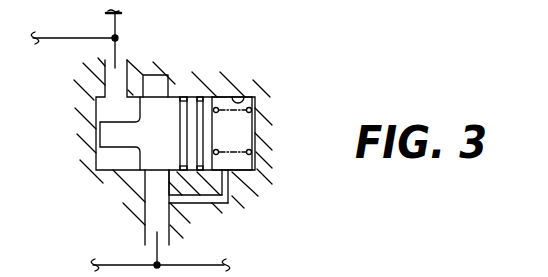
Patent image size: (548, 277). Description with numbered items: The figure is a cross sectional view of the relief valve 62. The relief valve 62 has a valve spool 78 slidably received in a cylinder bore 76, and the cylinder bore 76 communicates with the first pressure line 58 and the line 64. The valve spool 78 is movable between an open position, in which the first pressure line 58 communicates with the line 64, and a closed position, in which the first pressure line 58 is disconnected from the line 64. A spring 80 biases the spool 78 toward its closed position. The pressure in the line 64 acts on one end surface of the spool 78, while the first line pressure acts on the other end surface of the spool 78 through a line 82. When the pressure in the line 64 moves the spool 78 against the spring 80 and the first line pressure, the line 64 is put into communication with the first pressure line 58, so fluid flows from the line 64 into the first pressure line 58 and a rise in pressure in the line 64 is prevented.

The first pressure line 58 is at (113, 265).
The relief valve 62 is at (283, 118).
The line 64 is at (71, 38).
The cylinder bore 76 is at (238, 97).
The valve spool 78 is at (176, 96).
The spring 80 is at (250, 173).
The line 82 is at (213, 205).